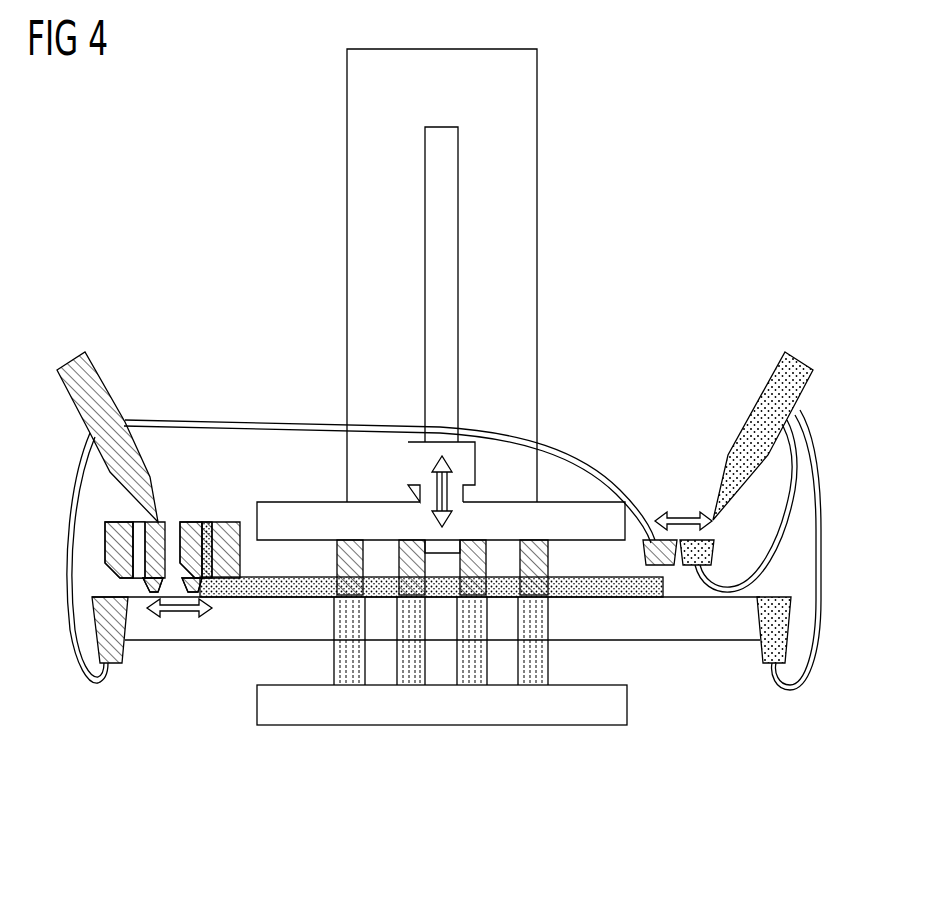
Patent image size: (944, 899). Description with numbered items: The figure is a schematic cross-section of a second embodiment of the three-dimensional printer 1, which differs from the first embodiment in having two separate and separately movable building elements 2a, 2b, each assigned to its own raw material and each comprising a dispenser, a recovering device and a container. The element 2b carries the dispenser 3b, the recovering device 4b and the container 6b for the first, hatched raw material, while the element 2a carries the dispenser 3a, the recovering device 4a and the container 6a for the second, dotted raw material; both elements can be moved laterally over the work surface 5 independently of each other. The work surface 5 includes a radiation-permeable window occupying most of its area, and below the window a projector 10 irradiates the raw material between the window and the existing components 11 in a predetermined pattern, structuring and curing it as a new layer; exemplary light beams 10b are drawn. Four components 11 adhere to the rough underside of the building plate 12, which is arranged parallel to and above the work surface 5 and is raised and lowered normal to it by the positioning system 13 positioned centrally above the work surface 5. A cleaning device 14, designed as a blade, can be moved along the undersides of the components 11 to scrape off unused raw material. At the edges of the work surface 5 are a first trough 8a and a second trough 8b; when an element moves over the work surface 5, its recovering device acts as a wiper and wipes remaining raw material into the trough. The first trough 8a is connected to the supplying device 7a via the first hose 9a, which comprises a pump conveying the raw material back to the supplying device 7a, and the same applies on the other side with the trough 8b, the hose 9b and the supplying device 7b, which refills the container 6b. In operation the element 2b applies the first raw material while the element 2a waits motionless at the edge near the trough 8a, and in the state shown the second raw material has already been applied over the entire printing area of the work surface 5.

The 3D printer 1 is at (179, 188).
The positioning system 13 is at (541, 280).
The building plate 12 is at (308, 512).
The components 11 is at (396, 558).
The projector 10 is at (627, 705).
The light beams 10b is at (408, 690).
The work surface 5 is at (688, 627).
The first trough 8a is at (760, 617).
The second trough 8b is at (98, 625).
The supplying device 7a is at (757, 375).
The supplying device 7b is at (100, 366).
The first hose 9a is at (800, 505).
The hose 9b is at (222, 425).
The cleaning device 14 is at (678, 503).
The building element 2a is at (228, 518).
The building element 2b is at (108, 540).
The container 6a is at (205, 522).
The container 6b is at (136, 522).
The dispenser 3a is at (212, 565).
The dispenser 3b is at (138, 570).
The recovering device 4a is at (190, 594).
The recovering device 4b is at (155, 594).